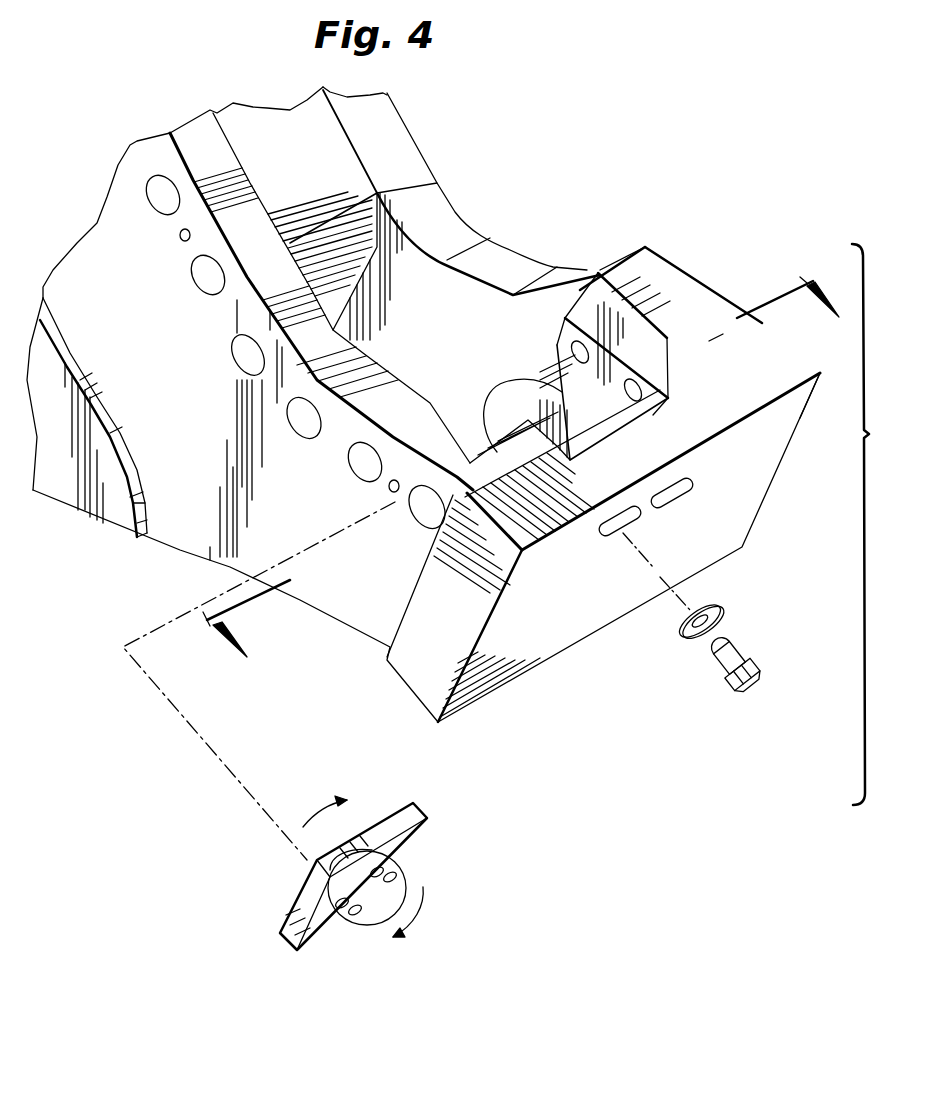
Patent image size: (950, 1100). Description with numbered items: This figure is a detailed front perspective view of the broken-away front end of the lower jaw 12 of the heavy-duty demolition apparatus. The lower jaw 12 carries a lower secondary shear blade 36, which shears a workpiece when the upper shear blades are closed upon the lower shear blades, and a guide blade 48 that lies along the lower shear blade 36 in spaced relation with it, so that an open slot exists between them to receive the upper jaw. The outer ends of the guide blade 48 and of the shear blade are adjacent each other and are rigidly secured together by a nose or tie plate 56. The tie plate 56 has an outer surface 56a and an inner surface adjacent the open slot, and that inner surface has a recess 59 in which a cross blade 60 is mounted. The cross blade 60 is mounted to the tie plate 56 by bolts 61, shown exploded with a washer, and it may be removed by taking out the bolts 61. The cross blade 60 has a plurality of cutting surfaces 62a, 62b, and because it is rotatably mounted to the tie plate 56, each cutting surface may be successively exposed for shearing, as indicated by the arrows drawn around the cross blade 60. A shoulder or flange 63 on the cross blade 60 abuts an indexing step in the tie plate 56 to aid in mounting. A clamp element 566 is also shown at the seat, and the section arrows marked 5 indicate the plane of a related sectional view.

The lower jaw 12 is at (170, 563).
The lower secondary shear blade 36 is at (163, 487).
The guide blade 48 is at (447, 197).
The wedge clamp 566 is at (668, 395).
The recess 59 is at (822, 374).
The tie plate 56 is at (765, 475).
The outer surface 56a is at (709, 563).
The bolts 61 is at (769, 674).
The section line 5- 5 is at (487, 568).
The cross blade 60 is at (440, 850).
The cutting surface 62a is at (400, 815).
The cutting surface 62b is at (303, 900).
The shoulder or flange 63 is at (395, 883).